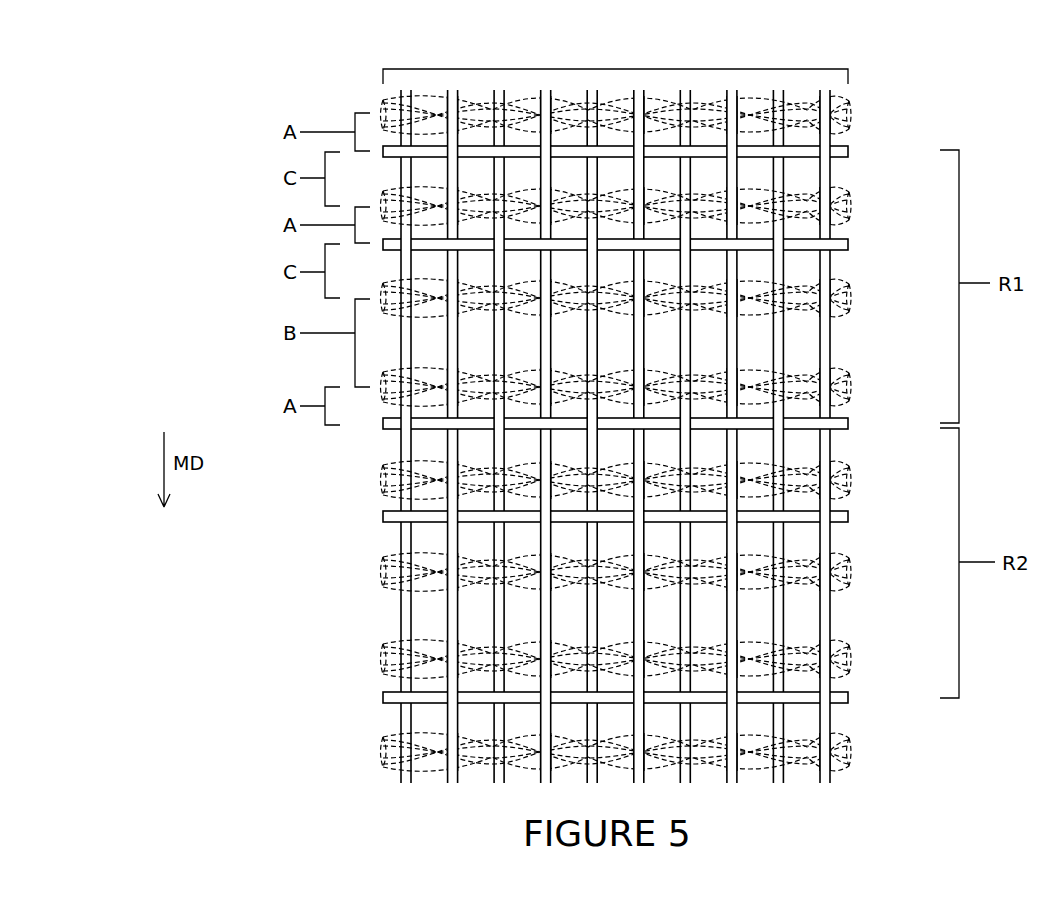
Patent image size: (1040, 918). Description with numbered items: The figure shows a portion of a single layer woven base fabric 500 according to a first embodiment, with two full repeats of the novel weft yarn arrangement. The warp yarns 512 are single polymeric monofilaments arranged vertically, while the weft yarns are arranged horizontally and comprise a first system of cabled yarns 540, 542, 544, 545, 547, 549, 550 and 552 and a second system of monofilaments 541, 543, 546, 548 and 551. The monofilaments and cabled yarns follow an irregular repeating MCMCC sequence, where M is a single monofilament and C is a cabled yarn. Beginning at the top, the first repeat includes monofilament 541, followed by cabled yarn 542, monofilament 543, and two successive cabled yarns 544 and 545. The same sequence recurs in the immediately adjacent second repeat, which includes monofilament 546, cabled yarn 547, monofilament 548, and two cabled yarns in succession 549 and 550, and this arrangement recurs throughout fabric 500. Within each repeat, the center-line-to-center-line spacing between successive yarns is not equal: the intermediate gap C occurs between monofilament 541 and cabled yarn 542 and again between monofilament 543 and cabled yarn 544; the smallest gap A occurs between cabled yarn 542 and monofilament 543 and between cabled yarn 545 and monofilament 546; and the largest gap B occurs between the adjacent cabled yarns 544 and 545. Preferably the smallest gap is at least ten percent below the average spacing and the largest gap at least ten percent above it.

The single layer woven base fabric 500 is at (184, 123).
The warp yarns 512 is at (615, 60).
The cabled yarn 540 is at (848, 114).
The monofilament 541 is at (848, 151).
The cabled yarn 542 is at (848, 207).
The monofilament 543 is at (848, 244).
The cabled yarn 544 is at (848, 300).
The cabled yarn 545 is at (848, 389).
The monofilament 546 is at (848, 423).
The cabled yarn 547 is at (848, 482).
The monofilament 548 is at (848, 516).
The cabled yarn 549 is at (848, 574).
The cabled yarn 550 is at (848, 661).
The monofilament 551 is at (848, 697).
The cabled yarn 552 is at (848, 754).